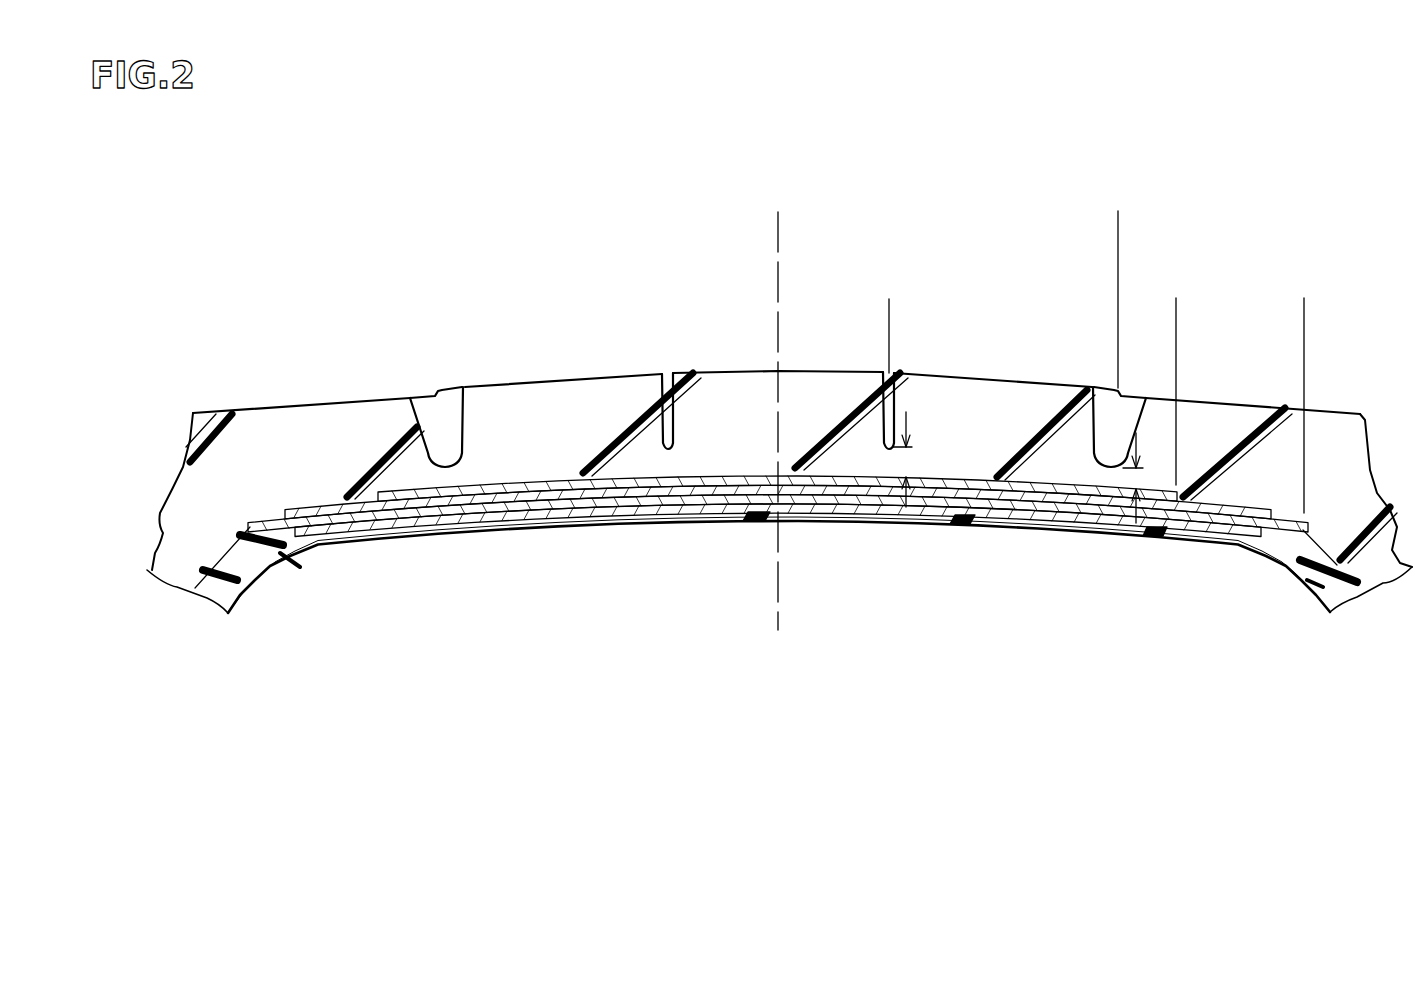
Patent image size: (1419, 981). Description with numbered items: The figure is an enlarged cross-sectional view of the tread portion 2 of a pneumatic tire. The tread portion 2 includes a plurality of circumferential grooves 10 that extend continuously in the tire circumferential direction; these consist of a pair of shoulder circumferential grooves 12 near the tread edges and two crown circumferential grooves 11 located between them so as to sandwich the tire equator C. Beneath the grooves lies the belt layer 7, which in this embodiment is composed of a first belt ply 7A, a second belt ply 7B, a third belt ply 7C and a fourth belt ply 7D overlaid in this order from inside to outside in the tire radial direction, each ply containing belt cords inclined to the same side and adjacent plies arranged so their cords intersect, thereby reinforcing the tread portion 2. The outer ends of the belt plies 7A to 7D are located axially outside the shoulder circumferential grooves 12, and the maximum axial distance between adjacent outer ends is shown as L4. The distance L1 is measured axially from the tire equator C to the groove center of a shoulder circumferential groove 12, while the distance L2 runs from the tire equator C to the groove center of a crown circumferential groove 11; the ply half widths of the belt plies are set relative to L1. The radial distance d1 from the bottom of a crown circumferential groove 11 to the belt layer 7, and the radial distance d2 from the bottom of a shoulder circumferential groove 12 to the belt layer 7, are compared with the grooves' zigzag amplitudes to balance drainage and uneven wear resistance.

The tread portion 2 is at (307, 352).
The belt layer 7 is at (778, 584).
The first belt ply 7A is at (448, 514).
The second belt ply 7B is at (652, 640).
The third belt ply 7C is at (580, 492).
The fourth belt ply 7D is at (640, 480).
The circumferential grooves 10 is at (778, 330).
The crown circumferential groove 11 is at (663, 372).
The shoulder circumferential groove 12 is at (445, 425).
The tire equator C is at (778, 245).
The distance from tire equator to groove center of shoulder circumferential groove L1 is at (1118, 211).
The distance from tire equator to groove center of crown circumferential groove L2 is at (889, 299).
The maximum distance between adjacent outer ends of belt plies L4 is at (1304, 298).
The distance from bottom of crown circumferential groove to belt layer d1 is at (906, 453).
The distance from bottom of shoulder circumferential groove to belt layer d2 is at (1136, 475).